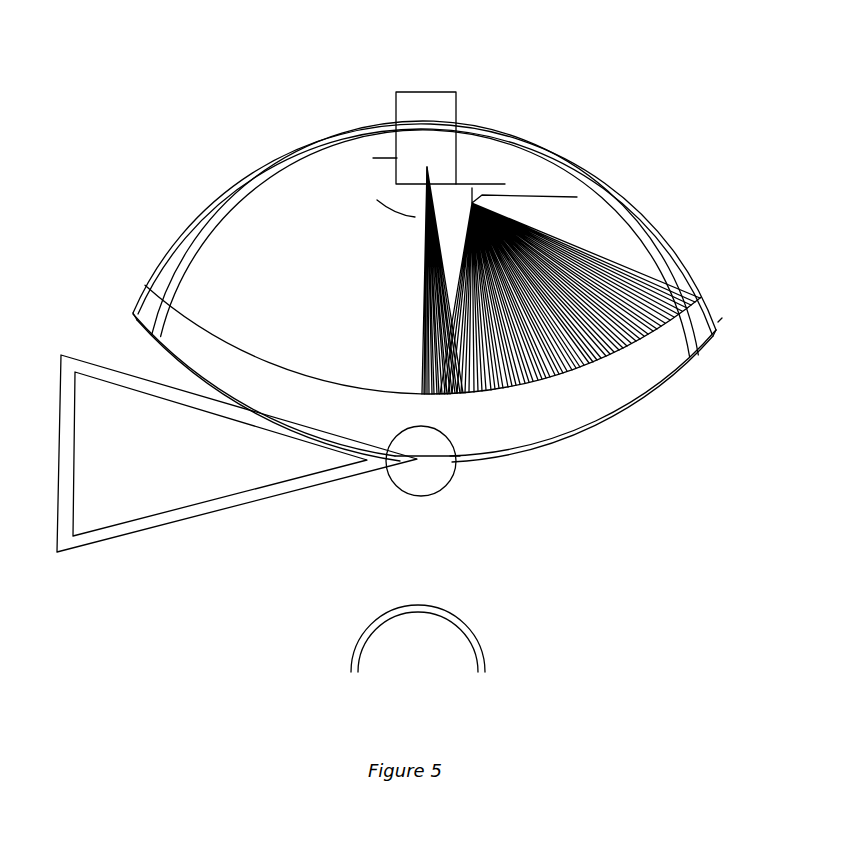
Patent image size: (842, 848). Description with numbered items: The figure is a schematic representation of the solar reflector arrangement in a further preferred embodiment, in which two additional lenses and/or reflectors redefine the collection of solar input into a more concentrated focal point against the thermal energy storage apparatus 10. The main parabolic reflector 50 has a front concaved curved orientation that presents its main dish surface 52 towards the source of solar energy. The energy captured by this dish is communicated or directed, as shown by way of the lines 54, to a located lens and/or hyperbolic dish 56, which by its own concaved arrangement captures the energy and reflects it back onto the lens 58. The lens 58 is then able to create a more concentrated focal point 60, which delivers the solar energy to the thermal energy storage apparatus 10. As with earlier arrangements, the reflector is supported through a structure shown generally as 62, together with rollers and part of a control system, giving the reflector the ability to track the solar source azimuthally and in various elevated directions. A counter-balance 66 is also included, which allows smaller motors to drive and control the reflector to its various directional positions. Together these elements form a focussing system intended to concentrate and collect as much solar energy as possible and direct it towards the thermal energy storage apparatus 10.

The thermal energy storage apparatus 10 is at (458, 91).
The main parabolic reflector 50 is at (657, 382).
The main dish surface 52 is at (672, 298).
The lines 54 is at (567, 241).
The lens and/or hyperbolic dish 56 is at (577, 197).
The lens 58 is at (420, 395).
The focal point 60 is at (415, 178).
The structure 62 is at (102, 362).
The counter-balance 66 is at (382, 663).